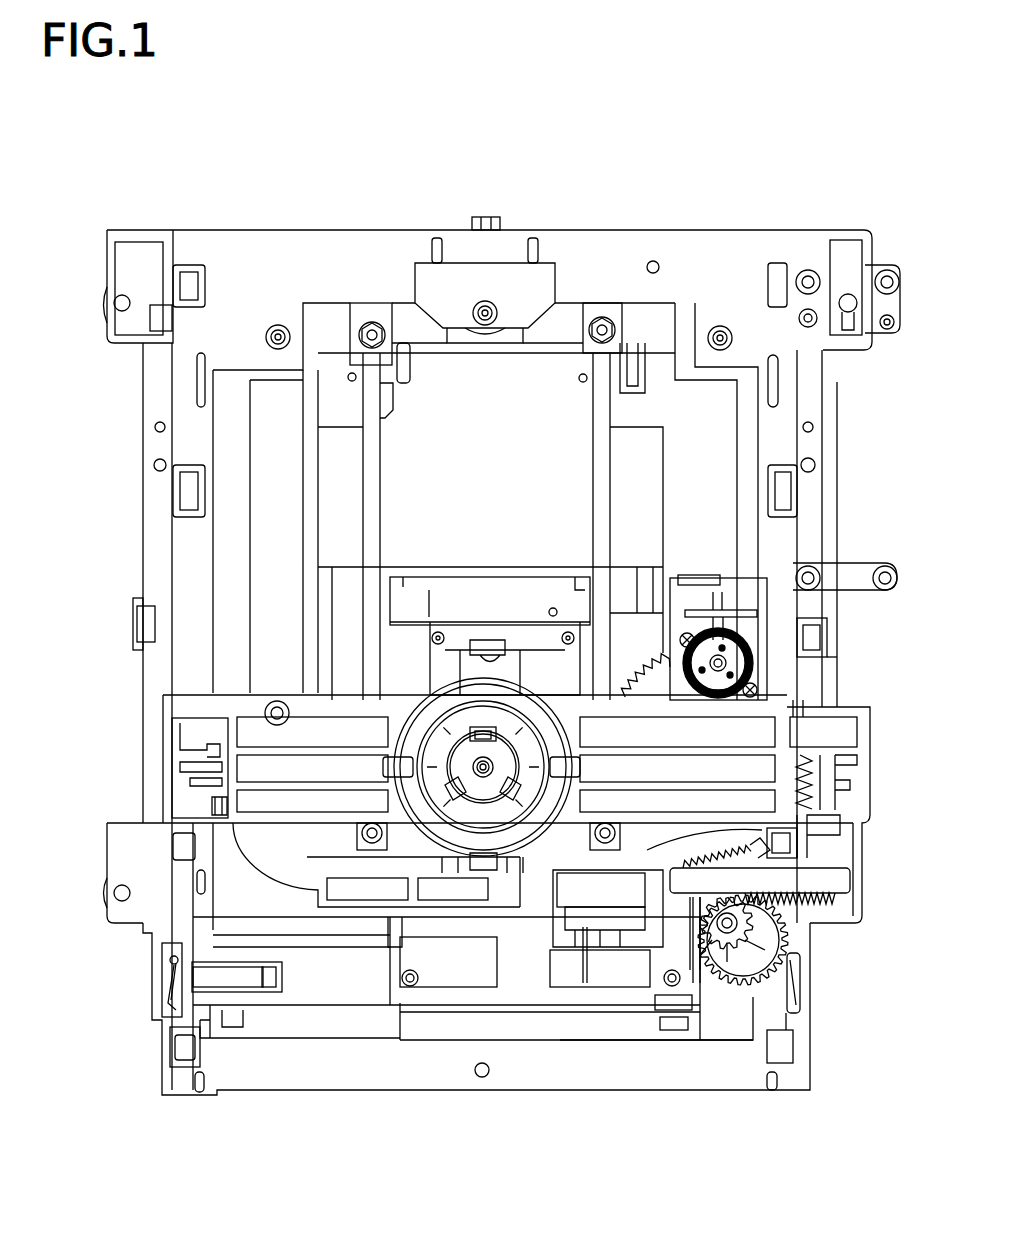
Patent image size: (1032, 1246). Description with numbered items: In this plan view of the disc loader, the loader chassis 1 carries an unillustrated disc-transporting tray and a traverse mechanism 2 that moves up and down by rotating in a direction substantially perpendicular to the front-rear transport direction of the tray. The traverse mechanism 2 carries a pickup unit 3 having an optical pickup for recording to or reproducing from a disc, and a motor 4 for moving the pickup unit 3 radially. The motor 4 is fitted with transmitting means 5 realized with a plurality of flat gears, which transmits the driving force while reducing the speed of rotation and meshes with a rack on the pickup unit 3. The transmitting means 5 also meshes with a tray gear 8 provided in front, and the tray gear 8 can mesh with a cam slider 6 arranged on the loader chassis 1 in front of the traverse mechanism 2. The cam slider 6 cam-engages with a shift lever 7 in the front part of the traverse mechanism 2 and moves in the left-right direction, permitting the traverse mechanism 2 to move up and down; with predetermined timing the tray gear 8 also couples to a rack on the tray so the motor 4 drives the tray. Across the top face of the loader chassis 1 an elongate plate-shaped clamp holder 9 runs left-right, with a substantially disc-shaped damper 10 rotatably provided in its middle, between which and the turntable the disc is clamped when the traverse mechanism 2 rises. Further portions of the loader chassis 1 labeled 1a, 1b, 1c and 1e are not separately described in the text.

The loader chassis 1 is at (254, 1095).
The chassis bottom plate portion 1a is at (340, 1008).
The chassis bottom plate portion 1b is at (525, 1010).
The engaging portion of chassis 1c is at (208, 982).
The elastic holding portion of chassis 1e is at (166, 1002).
The traverse mechanism 2 is at (248, 545).
The pickup unit 3 is at (519, 603).
The motor 4 is at (728, 663).
The transmitting means 5 is at (783, 860).
The cam slider 6 is at (595, 990).
The shift lever 7 is at (322, 832).
The tray gear 8 is at (760, 942).
The clamp holder 9 is at (245, 803).
The damper 10 is at (442, 733).